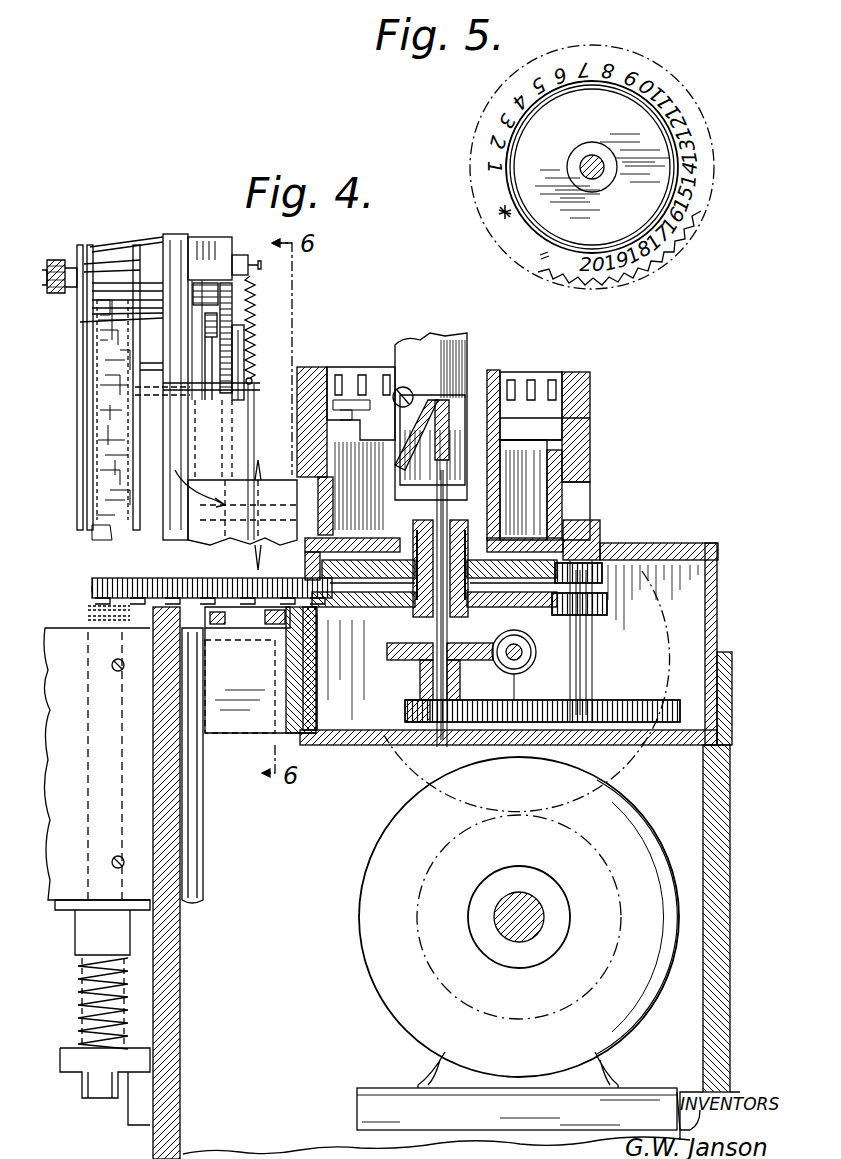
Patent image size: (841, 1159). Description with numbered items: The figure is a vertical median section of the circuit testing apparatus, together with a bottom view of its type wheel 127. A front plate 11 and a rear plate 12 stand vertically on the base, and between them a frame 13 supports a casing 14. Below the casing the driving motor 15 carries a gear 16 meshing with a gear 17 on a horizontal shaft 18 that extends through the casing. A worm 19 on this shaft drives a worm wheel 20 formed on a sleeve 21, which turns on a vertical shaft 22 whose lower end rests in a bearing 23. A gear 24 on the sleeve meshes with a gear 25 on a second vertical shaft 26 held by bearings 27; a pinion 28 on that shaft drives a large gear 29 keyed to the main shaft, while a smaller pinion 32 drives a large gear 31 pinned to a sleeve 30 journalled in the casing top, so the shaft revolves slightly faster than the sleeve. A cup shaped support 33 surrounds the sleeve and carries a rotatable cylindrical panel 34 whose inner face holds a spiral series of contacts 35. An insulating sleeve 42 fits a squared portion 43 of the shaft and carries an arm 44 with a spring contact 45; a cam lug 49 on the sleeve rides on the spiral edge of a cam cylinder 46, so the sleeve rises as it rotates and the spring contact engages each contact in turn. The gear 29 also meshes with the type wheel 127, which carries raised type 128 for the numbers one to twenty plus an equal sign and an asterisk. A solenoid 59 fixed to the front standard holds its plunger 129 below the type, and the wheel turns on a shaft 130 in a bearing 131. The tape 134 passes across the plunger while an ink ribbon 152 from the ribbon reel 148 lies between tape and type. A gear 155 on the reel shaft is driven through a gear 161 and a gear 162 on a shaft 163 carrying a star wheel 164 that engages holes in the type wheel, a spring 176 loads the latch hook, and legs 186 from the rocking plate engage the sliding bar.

In FIG. 4, the front plate 11 is at (181, 942).
In FIG. 4, the rear plate 12 is at (732, 878).
In FIG. 4, the frame 13 is at (248, 742).
In FIG. 4, the casing 14 is at (335, 746).
In FIG. 4, the driving motor 15 is at (372, 858).
In FIG. 4, the gear 16 is at (584, 826).
In FIG. 4, the gear 17 is at (625, 752).
In FIG. 4, the horizontal shaft 18 is at (522, 652).
In FIG. 4, the worm 19 is at (520, 675).
In FIG. 4, the worm wheel 20 is at (400, 660).
In FIG. 4, the sleeve 21 is at (422, 690).
In FIG. 4, the vertical shaft 22 is at (402, 740).
In FIG. 4, the bearing 23 is at (425, 750).
In FIG. 4, the gear 24 is at (480, 705).
In FIG. 4, the gear 25 is at (668, 660).
In FIG. 4, the vertical shaft 26 is at (593, 662).
In FIG. 4, the bearings 27 is at (590, 750).
In FIG. 4, the pinion 28 is at (600, 616).
In FIG. 4, the large gear 29 is at (522, 610).
In FIG. 4, the sleeve 30 is at (570, 500).
In FIG. 4, the large gear 31 is at (400, 585).
In FIG. 4, the pinion 32 is at (603, 590).
In FIG. 4, the cup shaped support 33 is at (575, 520).
In FIG. 4, the cylindrical panel 34 is at (590, 418).
In FIG. 4, the contacts 35 is at (575, 375).
In FIG. 4, the insulating sleeve 42 is at (520, 412).
In FIG. 4, the squared portion 43 is at (448, 365).
In FIG. 4, the arm 44 is at (535, 375).
In FIG. 4, the spring contact 45 is at (340, 368).
In FIG. 4, the cam cylinder 46 is at (585, 440).
In FIG. 4, the cam lug 49 is at (498, 466).
In FIG. 4, the solenoid 59 is at (205, 866).
In FIG. 5, the type wheel 127 is at (706, 218).
In FIG. 4, the type wheel 127 is at (105, 578).
In FIG. 5, the raised type 128 is at (645, 284).
In FIG. 4, the solenoid plunger 129 is at (90, 660).
In FIG. 5, the shaft 130 is at (600, 160).
In FIG. 4, the shaft 130 is at (230, 650).
In FIG. 4, the bearing 131 is at (228, 628).
In FIG. 4, the tape 134 is at (88, 617).
In FIG. 4, the ink ribbon reel 148 is at (80, 490).
In FIG. 4, the ink ribbon 152 is at (92, 588).
In FIG. 4, the gear 155 is at (240, 353).
In FIG. 4, the gear 161 is at (255, 420).
In FIG. 4, the gear 162 is at (70, 424).
In FIG. 4, the shaft 163 is at (175, 552).
In FIG. 4, the star wheel 164 is at (262, 468).
In FIG. 4, the spring 176 is at (255, 308).
In FIG. 4, the legs 186 is at (140, 650).